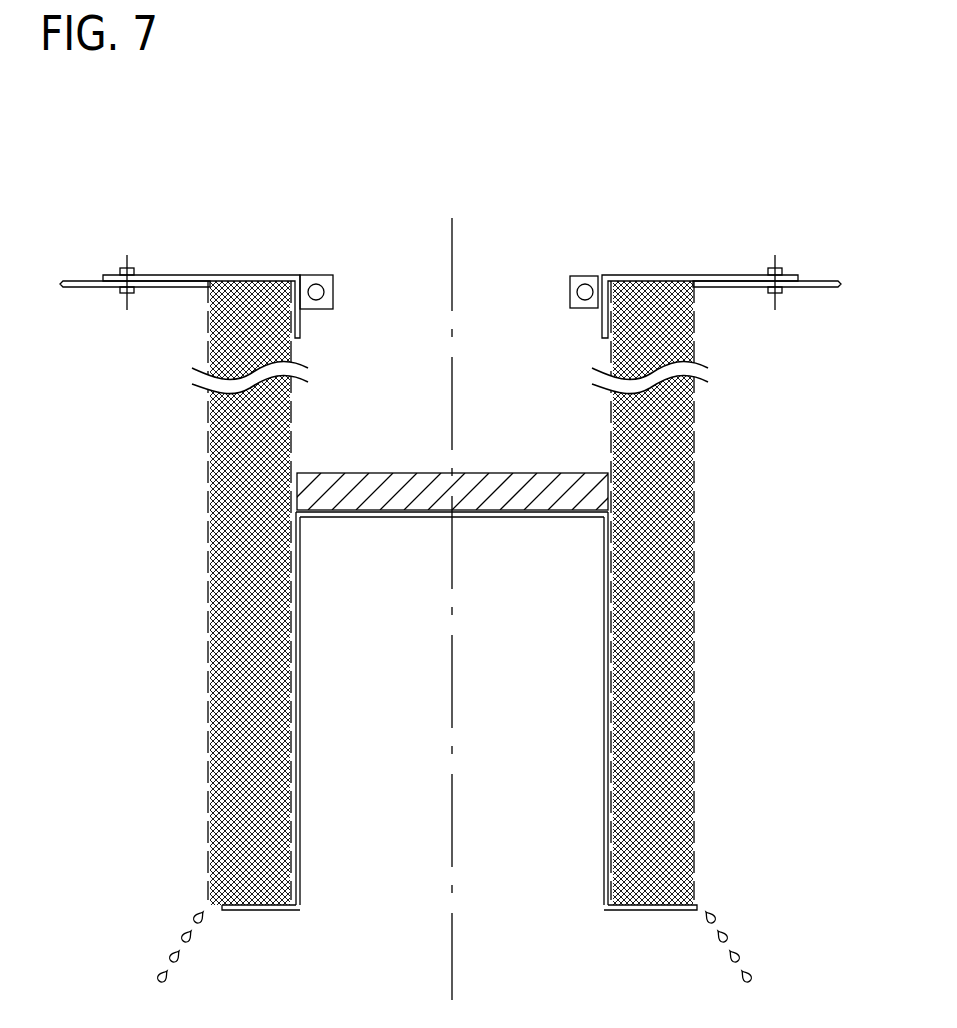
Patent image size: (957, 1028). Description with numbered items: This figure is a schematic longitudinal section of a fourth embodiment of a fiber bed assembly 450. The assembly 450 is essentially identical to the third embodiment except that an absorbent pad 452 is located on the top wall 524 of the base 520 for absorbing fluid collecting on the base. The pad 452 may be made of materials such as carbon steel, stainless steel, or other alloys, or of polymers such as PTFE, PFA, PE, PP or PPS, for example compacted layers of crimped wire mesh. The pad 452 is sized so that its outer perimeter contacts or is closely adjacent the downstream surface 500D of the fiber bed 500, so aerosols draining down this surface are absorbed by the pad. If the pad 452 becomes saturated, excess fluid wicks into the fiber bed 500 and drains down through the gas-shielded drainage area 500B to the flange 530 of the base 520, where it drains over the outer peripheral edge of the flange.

The fiber bed assembly 450 is at (380, 210).
The fiber bed 500 is at (232, 347).
The gas-shielded drainage area 500B is at (245, 727).
The downstream surface 500D is at (290, 345).
The absorbent pad 452 is at (407, 470).
The base 520 is at (303, 745).
The top wall 524 is at (370, 513).
The flange 530 is at (258, 912).